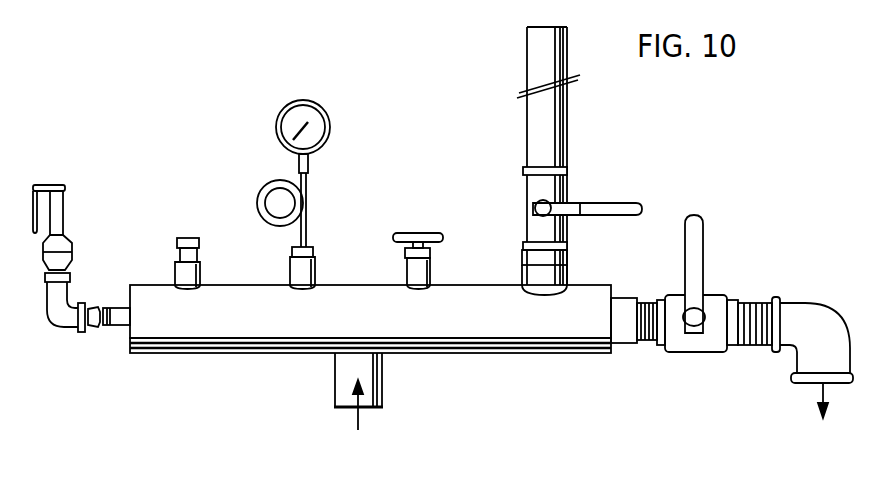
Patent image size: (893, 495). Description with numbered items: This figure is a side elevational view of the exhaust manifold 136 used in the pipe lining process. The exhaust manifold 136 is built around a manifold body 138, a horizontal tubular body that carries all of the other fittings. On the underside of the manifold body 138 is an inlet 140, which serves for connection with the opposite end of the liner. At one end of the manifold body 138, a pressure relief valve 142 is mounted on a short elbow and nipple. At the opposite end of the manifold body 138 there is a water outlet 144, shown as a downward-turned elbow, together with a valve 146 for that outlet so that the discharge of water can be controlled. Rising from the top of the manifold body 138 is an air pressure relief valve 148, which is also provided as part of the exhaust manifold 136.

The exhaust manifold 136 is at (428, 173).
The manifold body 138 is at (220, 352).
The inlet 140 is at (382, 392).
The pressure relief valve 142 is at (66, 207).
The water outlet 144 is at (793, 358).
The valve 146 is at (686, 290).
The air pressure relief valve 148 is at (530, 195).